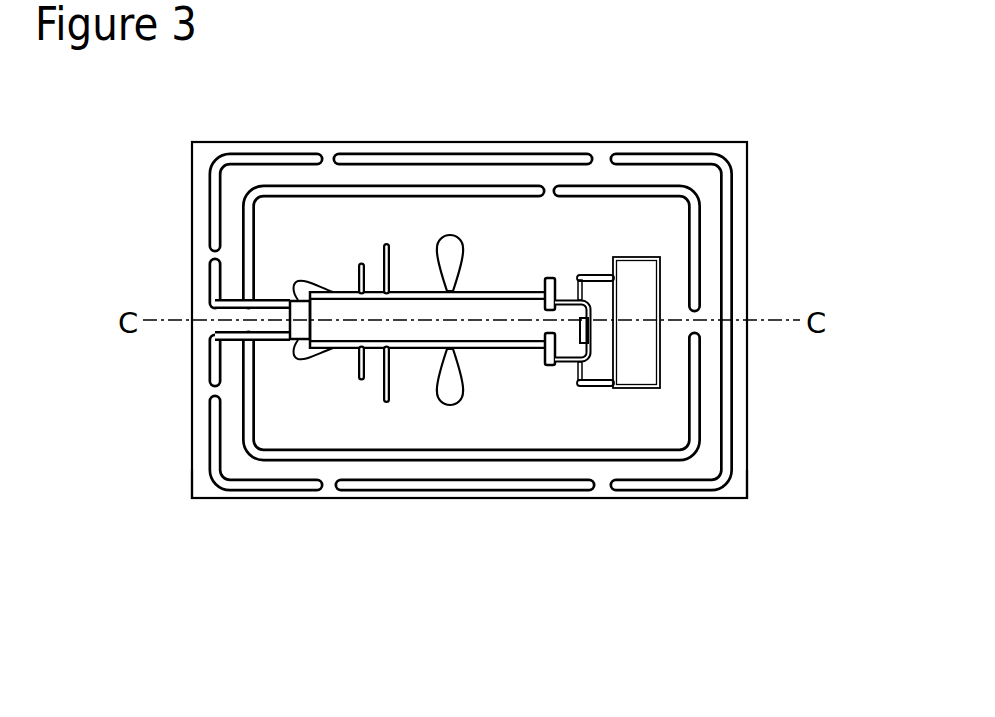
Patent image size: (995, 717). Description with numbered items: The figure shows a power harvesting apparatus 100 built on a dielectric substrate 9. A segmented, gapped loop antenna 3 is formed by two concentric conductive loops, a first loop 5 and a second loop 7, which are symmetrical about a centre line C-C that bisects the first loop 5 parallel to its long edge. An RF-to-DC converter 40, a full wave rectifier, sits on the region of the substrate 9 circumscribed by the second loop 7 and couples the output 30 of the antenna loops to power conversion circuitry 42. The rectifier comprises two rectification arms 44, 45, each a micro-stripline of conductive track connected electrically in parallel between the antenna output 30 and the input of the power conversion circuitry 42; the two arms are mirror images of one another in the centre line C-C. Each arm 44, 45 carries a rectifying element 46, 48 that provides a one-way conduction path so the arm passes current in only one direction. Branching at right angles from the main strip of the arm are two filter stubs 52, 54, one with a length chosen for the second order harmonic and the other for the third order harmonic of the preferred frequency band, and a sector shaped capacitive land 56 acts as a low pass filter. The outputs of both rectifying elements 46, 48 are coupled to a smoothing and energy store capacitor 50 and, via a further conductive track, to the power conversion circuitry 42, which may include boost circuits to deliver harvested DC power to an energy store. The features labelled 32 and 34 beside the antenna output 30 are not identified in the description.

The power harvesting apparatus 100 is at (371, 548).
The segmented loop antenna 3 is at (176, 491).
The first loop 5 is at (436, 162).
The second loop 7 is at (493, 192).
The dielectric substrate 9 is at (742, 217).
The antenna output 30 is at (186, 300).
The upper sealing lip 32 is at (272, 306).
The lower sealing lip 34 is at (267, 338).
The RF-to-DC converter 40 is at (369, 210).
The power conversion circuitry 42 is at (651, 313).
The rectification arm 44 is at (476, 291).
The rectification arm 45 is at (511, 350).
The rectifying element 46 is at (548, 278).
The rectifying element 48 is at (551, 365).
The smoothing/energy store capacitor 50 is at (592, 322).
The filter stub 52 is at (360, 382).
The filter stub 54 is at (389, 404).
The sector shaped capacitive land 56 is at (451, 404).